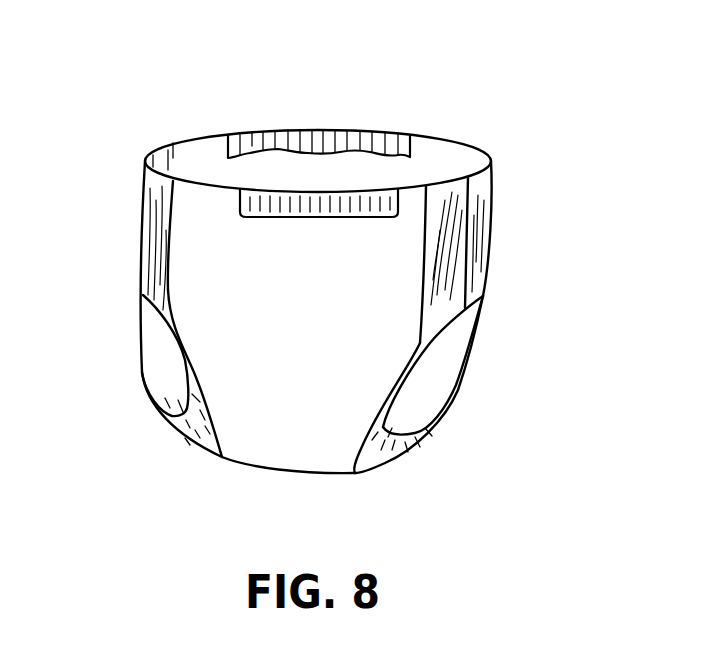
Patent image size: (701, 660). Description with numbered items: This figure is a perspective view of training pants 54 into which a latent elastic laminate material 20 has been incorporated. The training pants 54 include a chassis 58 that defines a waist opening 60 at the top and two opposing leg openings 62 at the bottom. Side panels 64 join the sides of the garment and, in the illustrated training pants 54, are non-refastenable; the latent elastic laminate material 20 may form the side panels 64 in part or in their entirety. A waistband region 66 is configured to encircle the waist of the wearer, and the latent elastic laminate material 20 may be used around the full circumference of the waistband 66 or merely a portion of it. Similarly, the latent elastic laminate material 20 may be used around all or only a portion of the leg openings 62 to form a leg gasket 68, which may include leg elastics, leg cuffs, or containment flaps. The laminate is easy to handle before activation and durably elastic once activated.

The training pants 54 is at (440, 81).
The chassis 58 is at (260, 447).
The waist opening 60 is at (210, 158).
The leg openings 62 is at (154, 349).
The side panels 64 is at (482, 200).
The waistband region 66 is at (317, 133).
The leg gasket 68 is at (178, 431).
The latent elastic laminate material 20 is at (293, 208).